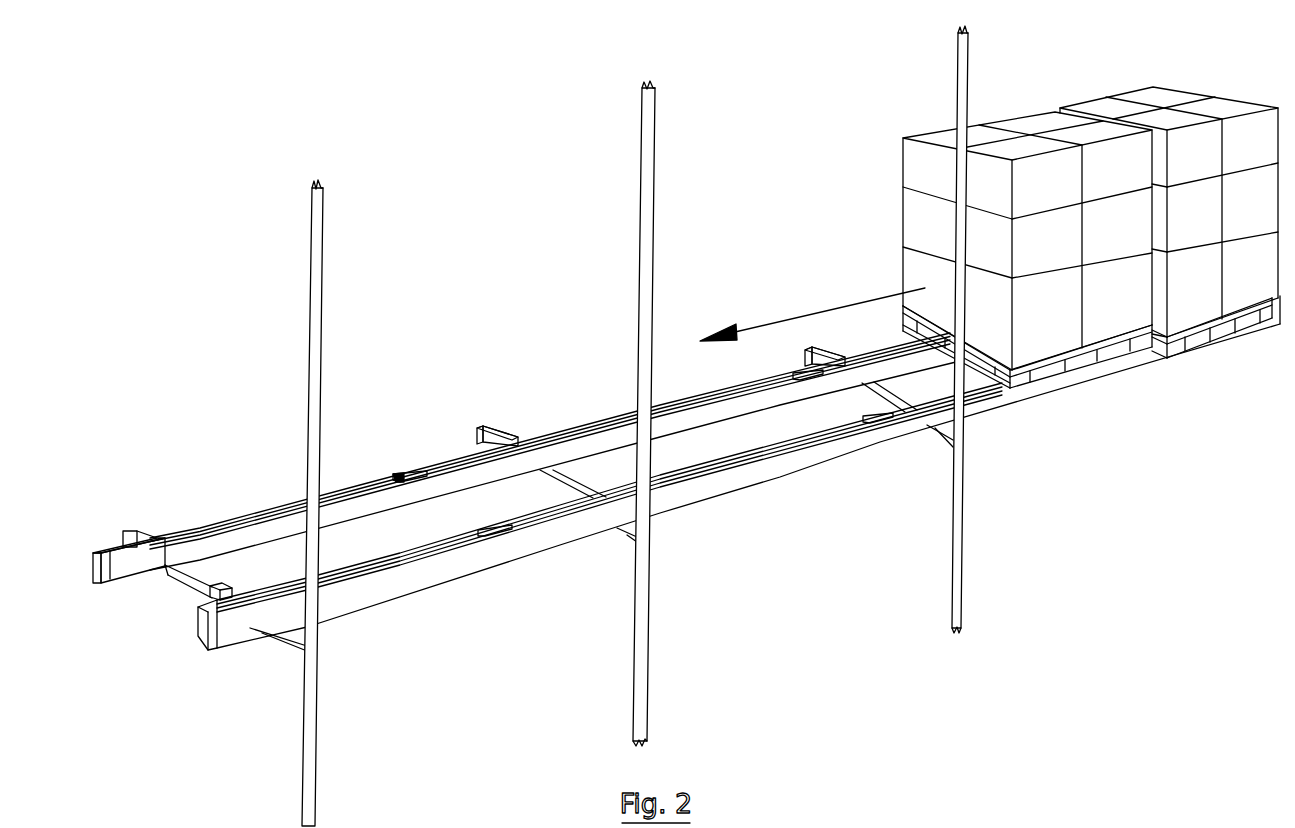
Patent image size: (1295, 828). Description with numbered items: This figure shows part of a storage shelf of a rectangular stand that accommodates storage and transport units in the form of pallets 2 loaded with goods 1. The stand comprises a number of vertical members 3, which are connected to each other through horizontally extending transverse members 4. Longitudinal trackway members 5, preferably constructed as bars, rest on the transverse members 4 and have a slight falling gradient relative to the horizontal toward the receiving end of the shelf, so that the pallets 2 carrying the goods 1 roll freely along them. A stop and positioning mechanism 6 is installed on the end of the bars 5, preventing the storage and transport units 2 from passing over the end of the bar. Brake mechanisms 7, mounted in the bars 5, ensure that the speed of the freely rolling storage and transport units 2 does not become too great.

The goods 1 is at (1033, 148).
The pallets 2 is at (1053, 357).
The vertical members 3 is at (648, 592).
The transverse members 4 is at (825, 347).
The longitudinal trackway members 5 is at (368, 505).
The stop and positioning mechanism 6 is at (133, 583).
The brake mechanisms 7 is at (400, 476).